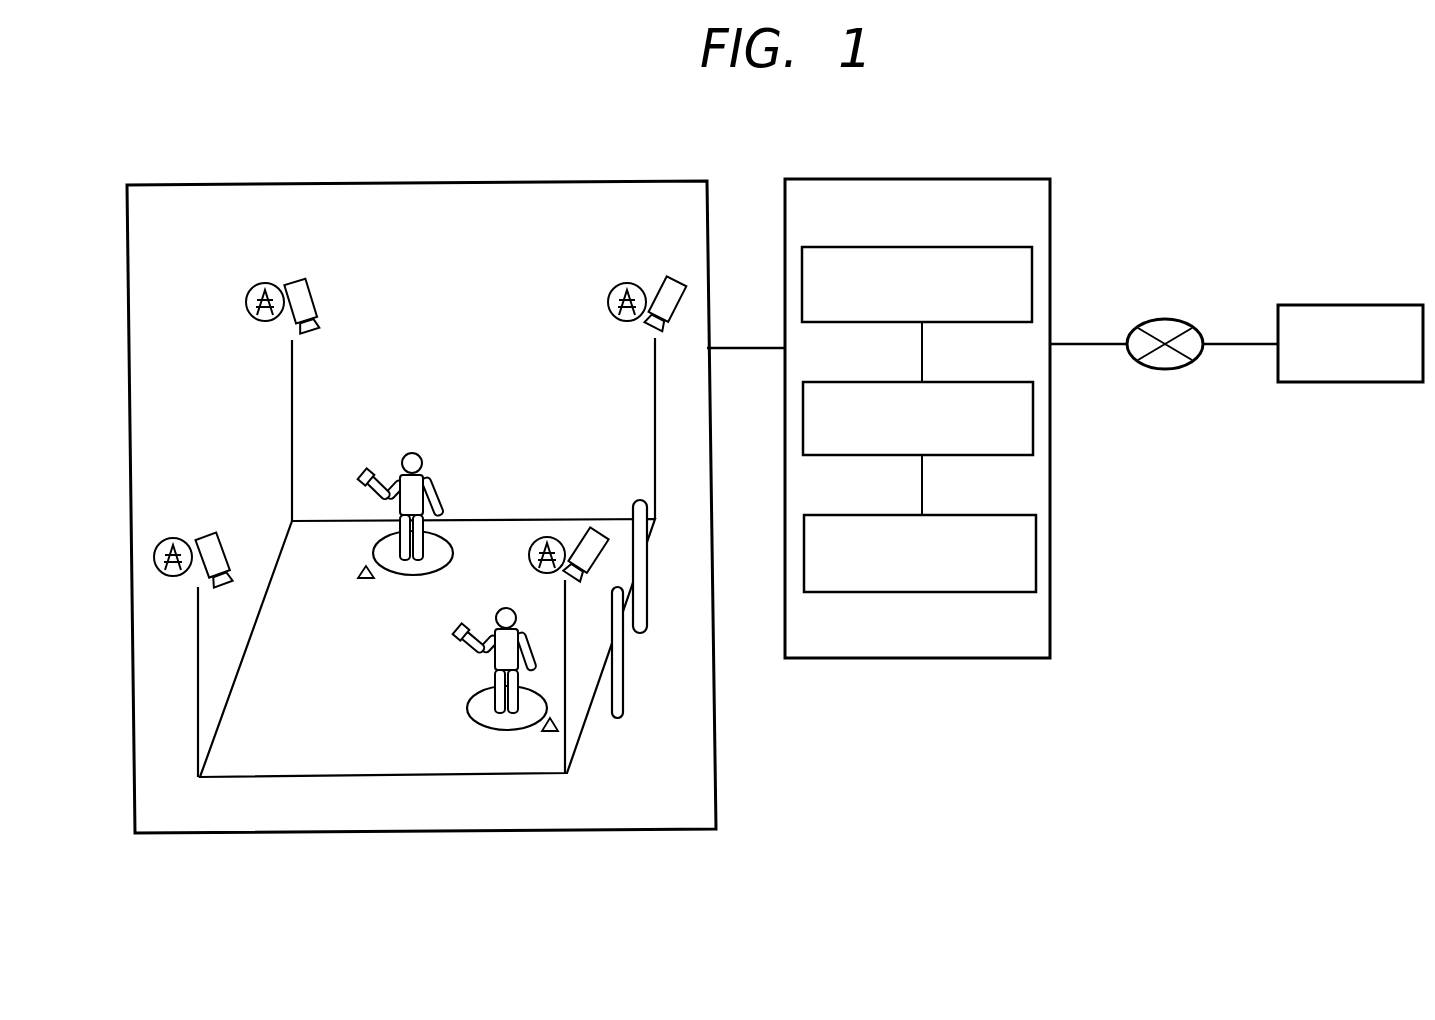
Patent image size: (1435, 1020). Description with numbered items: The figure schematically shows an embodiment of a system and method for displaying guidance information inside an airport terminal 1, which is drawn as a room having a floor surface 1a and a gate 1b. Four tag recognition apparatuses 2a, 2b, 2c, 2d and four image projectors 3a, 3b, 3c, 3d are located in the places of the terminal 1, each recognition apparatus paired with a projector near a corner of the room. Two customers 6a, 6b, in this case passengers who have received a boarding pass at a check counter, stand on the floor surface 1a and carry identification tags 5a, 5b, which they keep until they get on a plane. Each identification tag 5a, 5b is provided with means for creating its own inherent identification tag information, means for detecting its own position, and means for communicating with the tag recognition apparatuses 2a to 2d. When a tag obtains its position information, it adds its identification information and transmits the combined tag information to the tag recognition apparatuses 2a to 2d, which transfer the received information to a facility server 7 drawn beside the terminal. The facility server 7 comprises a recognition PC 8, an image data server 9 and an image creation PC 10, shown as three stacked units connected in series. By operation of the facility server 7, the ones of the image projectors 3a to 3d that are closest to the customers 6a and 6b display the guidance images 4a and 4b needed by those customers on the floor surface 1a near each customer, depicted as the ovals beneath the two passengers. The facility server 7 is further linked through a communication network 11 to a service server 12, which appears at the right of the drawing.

The airport terminal 1 is at (617, 181).
The floor surface 1a is at (266, 780).
The gate 1b is at (624, 668).
The tag recognition apparatus 2a is at (624, 283).
The tag recognition apparatus 2b is at (546, 537).
The tag recognition apparatus 2c is at (172, 538).
The tag recognition apparatus 2d is at (262, 283).
The image projector 3a is at (675, 278).
The image projector 3b is at (596, 528).
The image projector 3c is at (222, 542).
The image projector 3d is at (317, 292).
The projected image 4a is at (481, 718).
The projected image 4b is at (411, 576).
The identification tag 5a is at (455, 641).
The identification tag 5b is at (362, 472).
The customer 6a is at (503, 608).
The customer 6b is at (407, 455).
The facility server 7 is at (988, 180).
The recognition PC 8 is at (984, 246).
The image data server 9 is at (986, 381).
The image creation PC 10 is at (988, 514).
The communication network 11 is at (1177, 319).
The service server 12 is at (1378, 305).